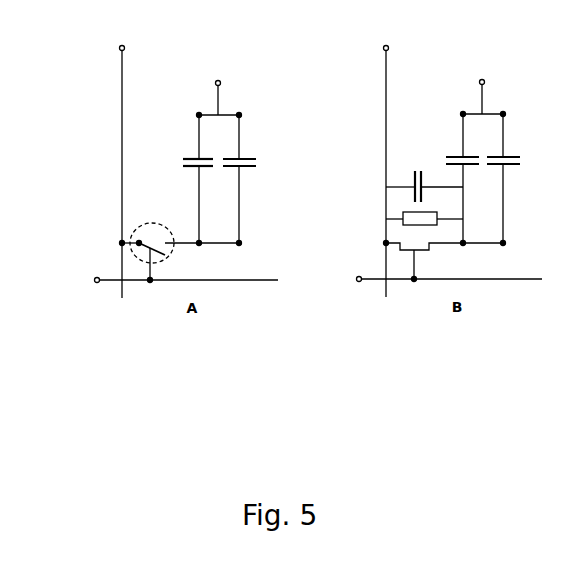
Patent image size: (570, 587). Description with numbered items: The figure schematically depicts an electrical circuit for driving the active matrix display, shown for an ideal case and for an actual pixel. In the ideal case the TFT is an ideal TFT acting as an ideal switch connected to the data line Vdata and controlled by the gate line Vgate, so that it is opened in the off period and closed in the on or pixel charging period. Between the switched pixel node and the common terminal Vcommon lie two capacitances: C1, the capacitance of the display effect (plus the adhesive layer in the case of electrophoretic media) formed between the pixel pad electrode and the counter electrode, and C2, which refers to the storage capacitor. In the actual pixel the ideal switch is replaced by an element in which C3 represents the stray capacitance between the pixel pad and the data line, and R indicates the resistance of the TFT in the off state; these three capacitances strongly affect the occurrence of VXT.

The data voltage line Vdata is at (254, 163).
The common voltage terminal Vcommon is at (350, 88).
The gate voltage line Vgate is at (298, 279).
The capacitance of the display effect C1 is at (189, 150).
The storage capacitor C2 is at (252, 151).
The stray capacitance C3 is at (413, 169).
The resistance of the TFT in the off state R is at (404, 208).
The ideal TFT is at (133, 240).